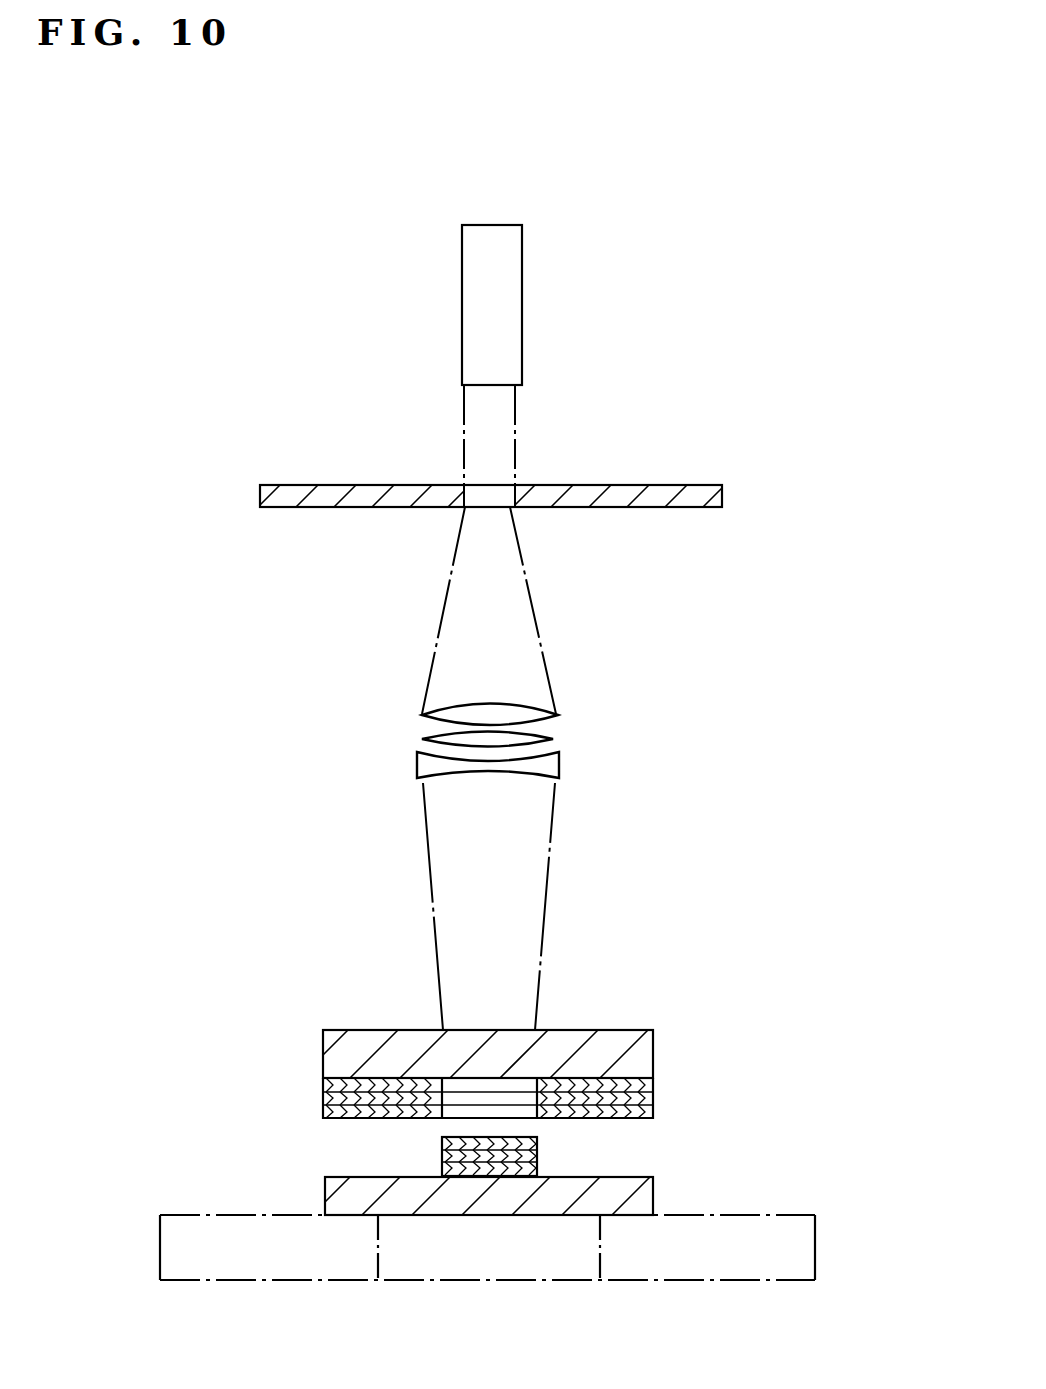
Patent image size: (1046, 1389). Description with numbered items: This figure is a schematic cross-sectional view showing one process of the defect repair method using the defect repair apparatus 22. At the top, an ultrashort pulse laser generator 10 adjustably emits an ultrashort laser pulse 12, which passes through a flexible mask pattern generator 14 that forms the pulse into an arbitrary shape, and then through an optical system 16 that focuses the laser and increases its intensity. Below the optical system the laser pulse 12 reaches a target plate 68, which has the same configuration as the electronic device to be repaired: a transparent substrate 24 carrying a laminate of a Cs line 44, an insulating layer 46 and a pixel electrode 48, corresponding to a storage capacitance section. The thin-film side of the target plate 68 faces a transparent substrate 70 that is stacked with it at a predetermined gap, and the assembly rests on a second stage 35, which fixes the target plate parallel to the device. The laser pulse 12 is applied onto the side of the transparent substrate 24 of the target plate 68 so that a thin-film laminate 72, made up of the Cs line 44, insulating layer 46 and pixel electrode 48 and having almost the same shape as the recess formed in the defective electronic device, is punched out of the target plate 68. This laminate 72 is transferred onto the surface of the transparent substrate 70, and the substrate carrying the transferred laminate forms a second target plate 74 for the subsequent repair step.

The ultrashort pulse laser generator 10 is at (508, 308).
The ultrashort laser pulse 12 is at (503, 418).
The flexible mask pattern generator 14 is at (674, 492).
The optical system 16 is at (600, 740).
The defect repair apparatus 22 is at (708, 360).
The transparent substrate 24 is at (640, 1048).
The second stage 35 is at (793, 1200).
The Cs line 44 is at (645, 1087).
The insulating layer 46 is at (645, 1097).
The pixel electrode 48 is at (648, 1113).
The target plate 68 is at (710, 972).
The transparent substrate 70 is at (638, 1190).
The thin-film laminate 72 is at (430, 1141).
The second target plate 74 is at (292, 1165).